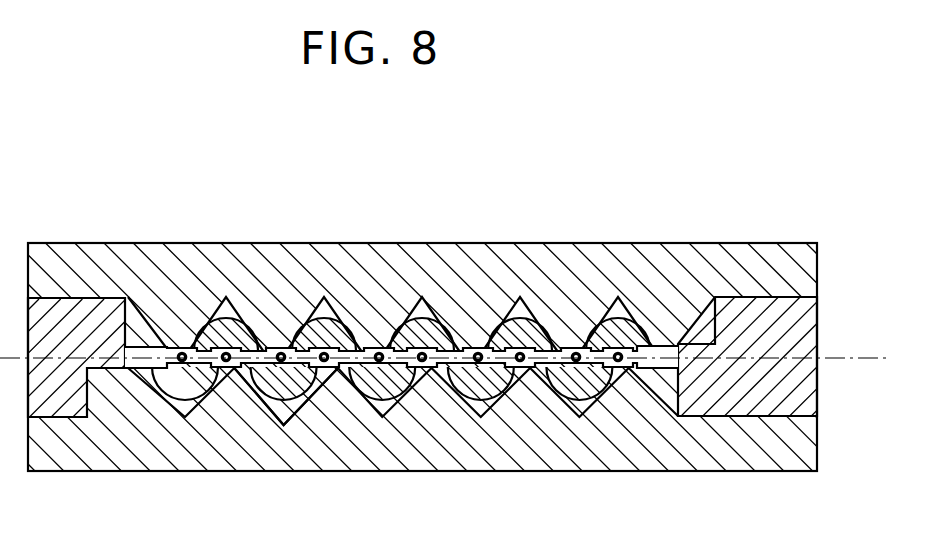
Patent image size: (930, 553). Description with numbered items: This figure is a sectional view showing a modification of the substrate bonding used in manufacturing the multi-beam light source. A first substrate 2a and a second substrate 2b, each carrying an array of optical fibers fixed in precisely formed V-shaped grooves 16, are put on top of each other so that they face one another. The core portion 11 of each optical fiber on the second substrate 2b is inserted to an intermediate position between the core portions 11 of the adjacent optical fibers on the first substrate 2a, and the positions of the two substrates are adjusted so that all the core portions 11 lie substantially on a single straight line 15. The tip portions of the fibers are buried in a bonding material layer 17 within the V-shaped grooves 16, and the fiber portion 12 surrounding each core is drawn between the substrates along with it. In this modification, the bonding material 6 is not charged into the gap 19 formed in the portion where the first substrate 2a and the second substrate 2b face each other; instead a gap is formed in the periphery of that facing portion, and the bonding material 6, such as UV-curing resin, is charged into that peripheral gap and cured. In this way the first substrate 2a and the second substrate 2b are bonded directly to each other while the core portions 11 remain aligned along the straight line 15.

The first substrate 2a is at (200, 262).
The second substrate 2b is at (130, 447).
The bonding material 6 is at (65, 310).
The core portion 11 is at (425, 351).
The insulating layer 12 is at (444, 346).
The single straight line 15 is at (838, 357).
The V-shaped groove 16 is at (282, 428).
The bonding material layer 17 is at (700, 330).
The gap 19 is at (438, 370).